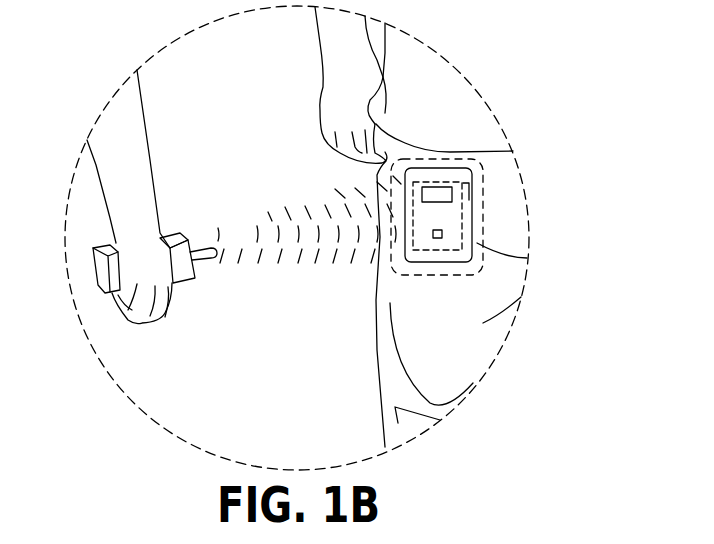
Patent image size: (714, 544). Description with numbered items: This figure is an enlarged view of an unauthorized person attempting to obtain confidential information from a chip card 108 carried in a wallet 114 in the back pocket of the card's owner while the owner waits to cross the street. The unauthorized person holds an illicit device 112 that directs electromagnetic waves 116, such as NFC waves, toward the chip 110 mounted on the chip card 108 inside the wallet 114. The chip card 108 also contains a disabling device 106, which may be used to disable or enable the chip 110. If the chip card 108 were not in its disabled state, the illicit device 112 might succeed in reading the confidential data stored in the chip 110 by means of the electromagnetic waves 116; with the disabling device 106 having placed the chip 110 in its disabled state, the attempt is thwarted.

The disabling device 106 is at (442, 233).
The chip card 108 is at (476, 200).
The chip 110 is at (432, 185).
The illicit device 112 is at (103, 272).
The wallet 114 is at (476, 181).
The electromagnetic waves 116 is at (242, 242).